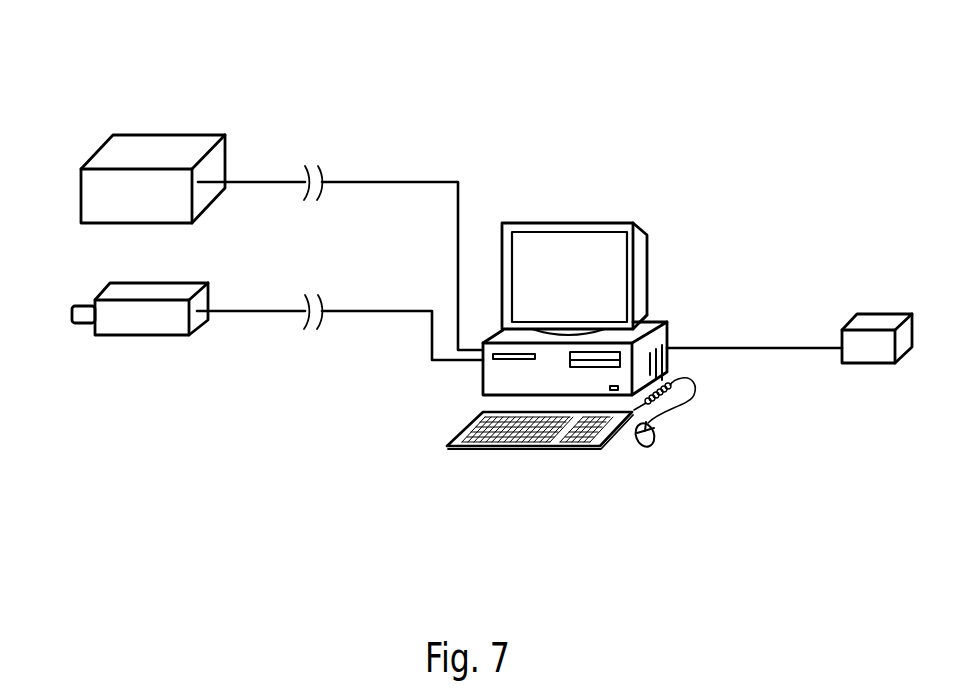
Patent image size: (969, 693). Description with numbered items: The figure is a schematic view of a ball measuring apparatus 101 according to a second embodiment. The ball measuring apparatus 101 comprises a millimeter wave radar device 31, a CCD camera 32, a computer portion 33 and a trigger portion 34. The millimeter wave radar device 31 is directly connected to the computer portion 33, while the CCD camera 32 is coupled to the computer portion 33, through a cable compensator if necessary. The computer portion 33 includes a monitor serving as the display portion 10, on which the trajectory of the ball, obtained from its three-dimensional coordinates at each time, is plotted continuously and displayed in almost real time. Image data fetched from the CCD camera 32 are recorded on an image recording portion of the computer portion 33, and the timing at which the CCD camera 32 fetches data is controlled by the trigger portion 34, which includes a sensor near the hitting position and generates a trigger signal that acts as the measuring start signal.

The ball measuring apparatus 101 is at (478, 110).
The display portion 10 is at (593, 255).
The millimeter wave radar device 31 is at (115, 162).
The CCD camera 32 is at (113, 293).
The computer portion 33 is at (545, 475).
The trigger portion 34 is at (877, 321).